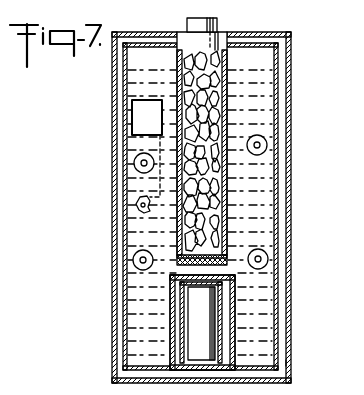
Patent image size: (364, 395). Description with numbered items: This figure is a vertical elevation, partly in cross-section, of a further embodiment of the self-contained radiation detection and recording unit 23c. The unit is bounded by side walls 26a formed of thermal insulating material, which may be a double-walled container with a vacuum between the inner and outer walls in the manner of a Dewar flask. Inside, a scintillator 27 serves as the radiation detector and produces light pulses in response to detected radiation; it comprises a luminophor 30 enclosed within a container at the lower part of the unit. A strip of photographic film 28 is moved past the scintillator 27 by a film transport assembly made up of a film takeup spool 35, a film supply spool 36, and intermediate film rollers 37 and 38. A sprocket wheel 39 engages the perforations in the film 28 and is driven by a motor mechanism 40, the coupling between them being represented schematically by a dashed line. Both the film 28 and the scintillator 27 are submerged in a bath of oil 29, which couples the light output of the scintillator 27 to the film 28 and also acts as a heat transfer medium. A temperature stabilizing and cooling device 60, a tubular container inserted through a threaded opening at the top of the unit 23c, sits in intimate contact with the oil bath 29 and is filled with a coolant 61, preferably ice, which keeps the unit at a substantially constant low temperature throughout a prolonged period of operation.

The radiation detection and recording unit 23c is at (318, 64).
The photographic film 28 is at (264, 220).
The oil bath 29 is at (254, 181).
The temperature stabilizing and cooling device 60 is at (230, 115).
The coolant 61 is at (227, 92).
The motor mechanism 40 is at (138, 116).
The film takeup spool 35 is at (134, 161).
The sprocket wheel 39 is at (142, 195).
The film roller 37 is at (141, 250).
The film supply spool 36 is at (266, 142).
The film roller 38 is at (268, 258).
The scintillator 27 is at (236, 311).
The luminophor 30 is at (213, 340).
The side walls 26a is at (296, 358).